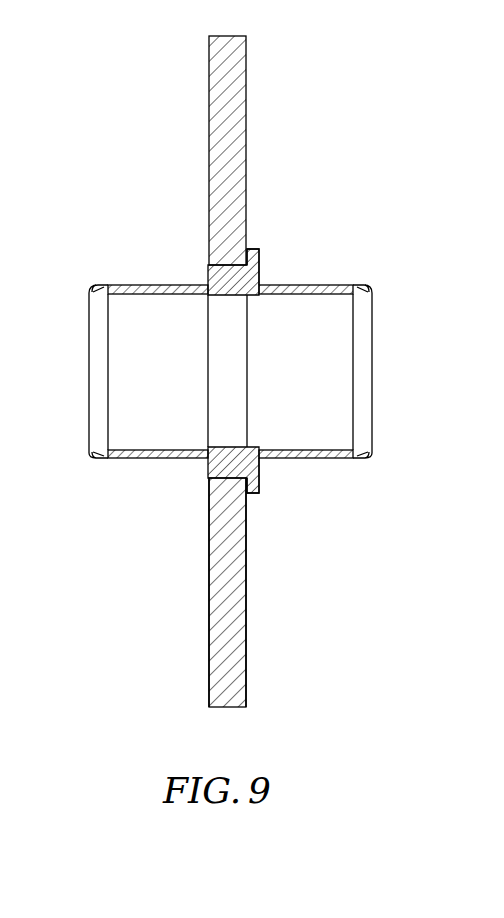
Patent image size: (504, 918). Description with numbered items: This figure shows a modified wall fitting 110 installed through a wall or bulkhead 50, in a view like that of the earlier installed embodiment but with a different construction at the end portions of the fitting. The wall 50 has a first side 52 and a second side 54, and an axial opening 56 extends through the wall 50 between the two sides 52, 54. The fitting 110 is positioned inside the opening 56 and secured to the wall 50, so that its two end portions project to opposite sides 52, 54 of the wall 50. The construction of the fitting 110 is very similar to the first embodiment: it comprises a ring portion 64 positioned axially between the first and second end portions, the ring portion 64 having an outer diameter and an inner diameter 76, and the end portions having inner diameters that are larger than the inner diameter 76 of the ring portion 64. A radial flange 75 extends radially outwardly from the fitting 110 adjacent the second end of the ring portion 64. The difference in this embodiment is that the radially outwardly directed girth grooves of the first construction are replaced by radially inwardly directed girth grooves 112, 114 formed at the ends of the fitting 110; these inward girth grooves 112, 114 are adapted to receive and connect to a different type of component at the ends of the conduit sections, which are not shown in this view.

The fitting 110 is at (266, 371).
The radially inwardly directed girth groove 112 is at (96, 285).
The radially inwardly directed girth groove 114 is at (372, 290).
The axial opening 56 is at (225, 238).
The ring portion 64 is at (217, 450).
The radial flange 75 is at (261, 258).
The inner diameter 76 is at (229, 447).
The wall 50 is at (230, 371).
The first side 52 is at (209, 672).
The second side 54 is at (246, 644).